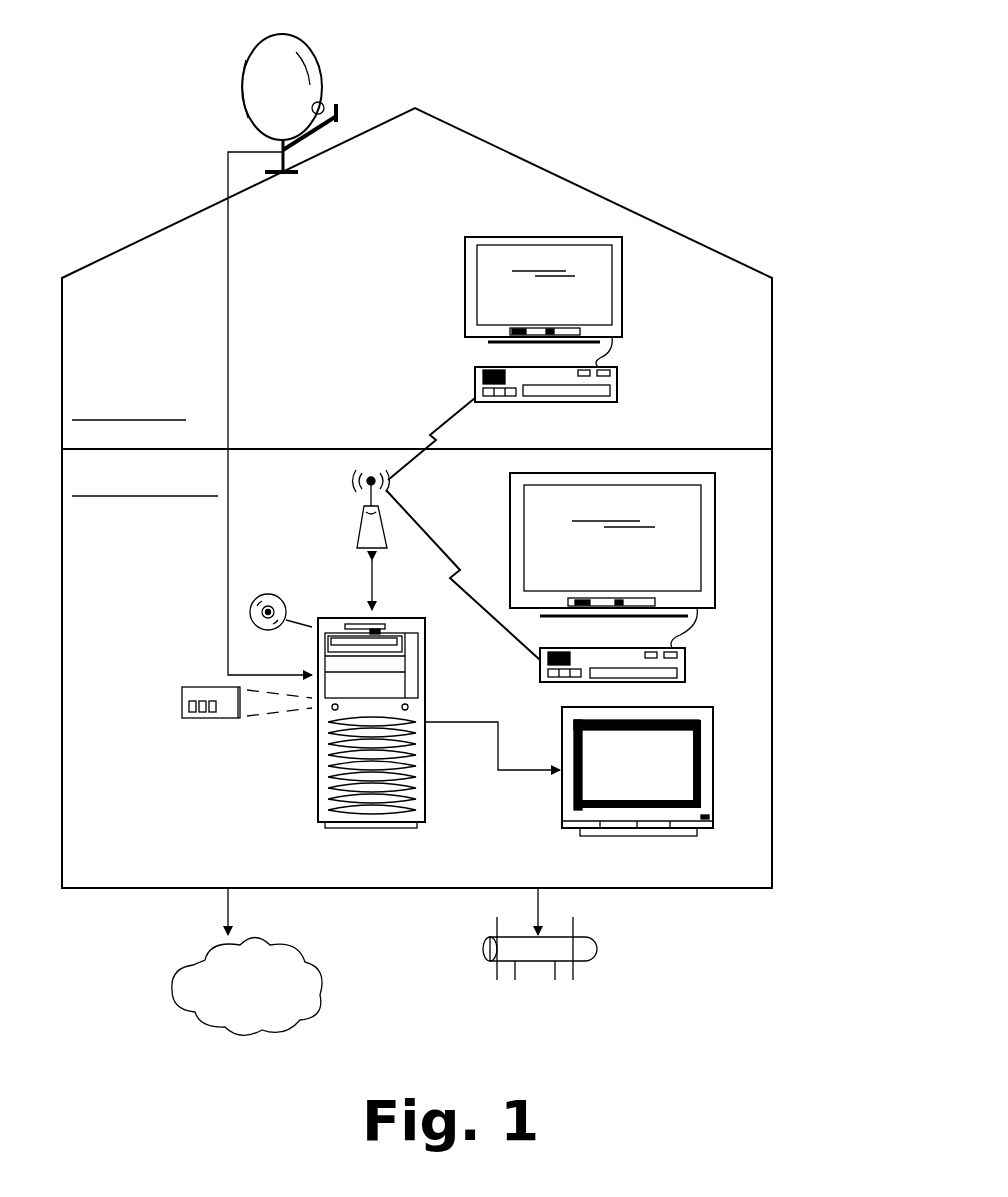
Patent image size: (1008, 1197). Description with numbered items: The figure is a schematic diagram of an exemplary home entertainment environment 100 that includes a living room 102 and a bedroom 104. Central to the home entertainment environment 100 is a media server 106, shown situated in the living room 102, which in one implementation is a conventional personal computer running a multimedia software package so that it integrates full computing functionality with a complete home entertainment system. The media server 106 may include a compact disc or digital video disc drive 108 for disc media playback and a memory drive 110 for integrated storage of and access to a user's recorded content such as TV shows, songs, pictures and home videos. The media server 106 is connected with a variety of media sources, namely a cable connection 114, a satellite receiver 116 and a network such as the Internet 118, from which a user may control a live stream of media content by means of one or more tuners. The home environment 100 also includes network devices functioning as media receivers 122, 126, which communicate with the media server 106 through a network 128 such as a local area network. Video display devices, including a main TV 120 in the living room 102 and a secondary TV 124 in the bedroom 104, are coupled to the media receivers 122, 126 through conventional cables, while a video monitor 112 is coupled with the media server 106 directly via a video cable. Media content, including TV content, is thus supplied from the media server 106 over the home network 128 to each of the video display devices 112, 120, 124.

The home entertainment environment 100 is at (612, 114).
The living room 102 is at (698, 890).
The bedroom 104 is at (190, 214).
The media server 106 is at (398, 616).
The CD or DVD drive 108 is at (258, 596).
The memory drive 110 is at (182, 702).
The video monitor 112 is at (714, 772).
The cable connection 114 is at (600, 950).
The satellite receiver 116 is at (268, 58).
The Internet 118 is at (172, 985).
The main TV 120 is at (716, 545).
The media receiver 122 is at (686, 665).
The secondary TV 124 is at (530, 236).
The media receiver 126 is at (618, 392).
The network 128 is at (358, 528).